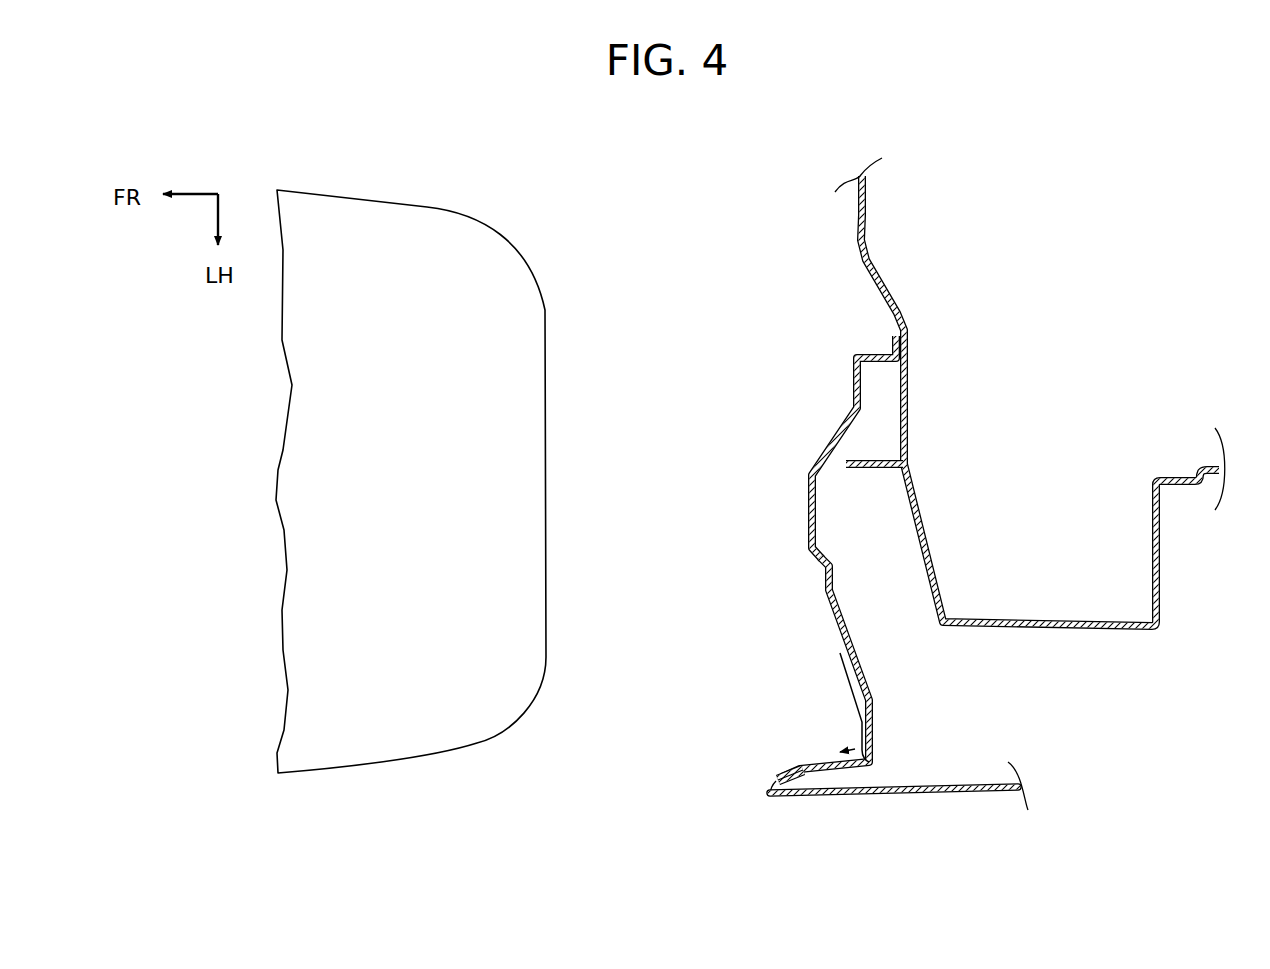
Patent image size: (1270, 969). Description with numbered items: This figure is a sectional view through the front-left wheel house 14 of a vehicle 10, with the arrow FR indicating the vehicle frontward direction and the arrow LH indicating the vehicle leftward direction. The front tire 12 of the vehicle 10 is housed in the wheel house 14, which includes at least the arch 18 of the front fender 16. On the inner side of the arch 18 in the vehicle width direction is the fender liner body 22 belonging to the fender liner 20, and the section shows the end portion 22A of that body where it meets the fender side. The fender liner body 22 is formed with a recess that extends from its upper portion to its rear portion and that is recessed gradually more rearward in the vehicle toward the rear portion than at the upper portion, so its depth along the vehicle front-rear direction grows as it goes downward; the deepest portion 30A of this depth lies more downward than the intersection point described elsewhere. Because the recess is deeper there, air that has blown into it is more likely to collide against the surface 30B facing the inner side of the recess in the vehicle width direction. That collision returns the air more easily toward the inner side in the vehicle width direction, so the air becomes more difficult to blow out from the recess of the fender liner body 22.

The vehicle 10 is at (977, 820).
The front tire 12 is at (427, 207).
The wheel house 14 is at (668, 745).
The front fender 16 is at (882, 800).
The arch 18 is at (775, 790).
The fender liner 20 is at (806, 524).
The fender liner body 22 is at (823, 588).
The end portion of second panel portion 22A is at (775, 779).
The deepest portion 30A is at (867, 748).
The surface 30B is at (827, 757).